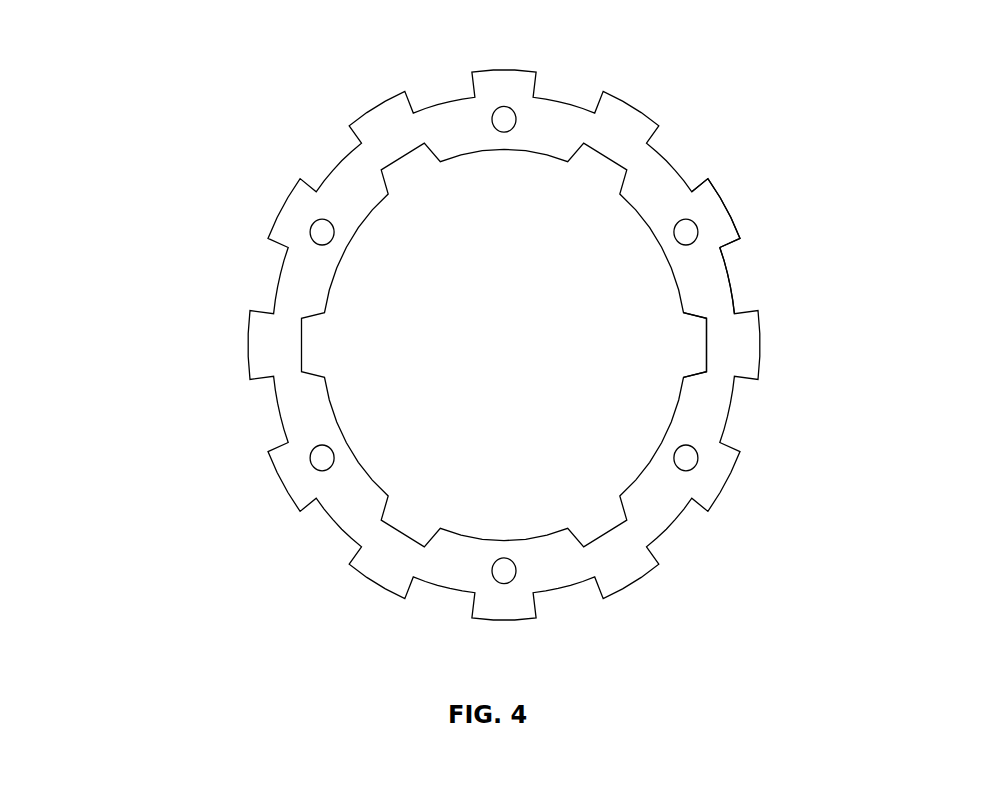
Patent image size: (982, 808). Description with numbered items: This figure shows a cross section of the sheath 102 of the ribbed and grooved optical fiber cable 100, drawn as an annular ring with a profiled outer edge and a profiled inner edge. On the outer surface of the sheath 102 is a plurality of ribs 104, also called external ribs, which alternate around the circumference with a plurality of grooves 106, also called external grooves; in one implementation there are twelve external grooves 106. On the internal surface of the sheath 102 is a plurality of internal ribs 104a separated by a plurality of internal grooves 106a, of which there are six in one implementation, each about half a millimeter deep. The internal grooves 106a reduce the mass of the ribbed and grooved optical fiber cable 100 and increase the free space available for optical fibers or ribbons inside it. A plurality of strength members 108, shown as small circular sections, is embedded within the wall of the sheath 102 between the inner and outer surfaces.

The ribbed and grooved optical fiber cable 100 is at (66, 40).
The sheath 102 is at (300, 290).
The ribs 104 is at (732, 212).
The internal ribs 104a is at (652, 252).
The grooves 106 is at (747, 280).
The internal grooves 106a is at (700, 352).
The strength members 108 is at (687, 457).